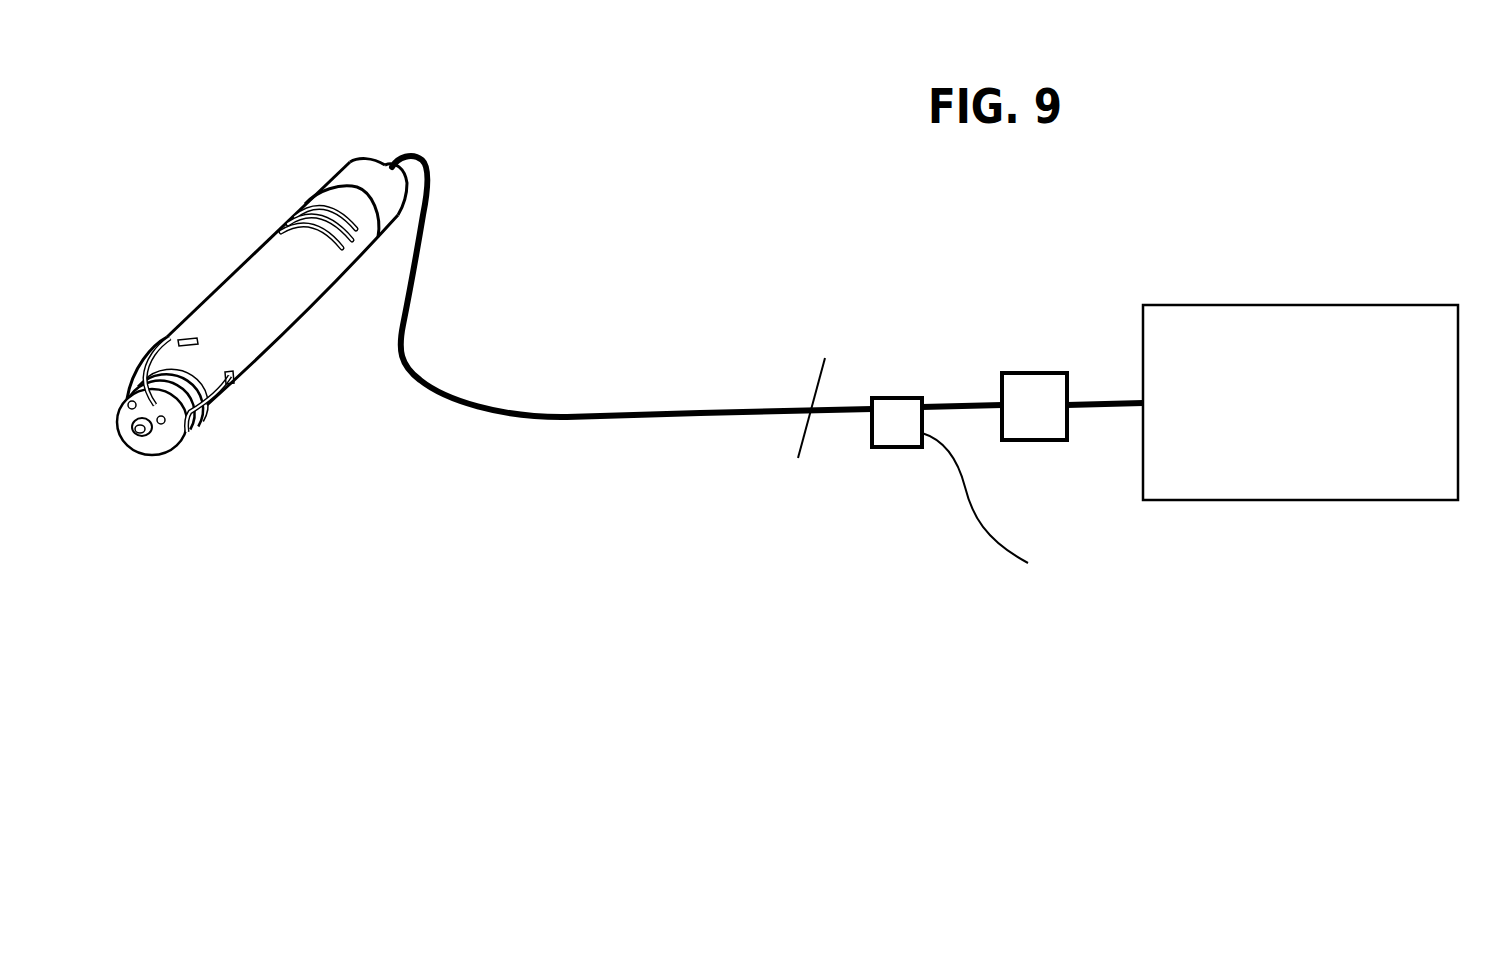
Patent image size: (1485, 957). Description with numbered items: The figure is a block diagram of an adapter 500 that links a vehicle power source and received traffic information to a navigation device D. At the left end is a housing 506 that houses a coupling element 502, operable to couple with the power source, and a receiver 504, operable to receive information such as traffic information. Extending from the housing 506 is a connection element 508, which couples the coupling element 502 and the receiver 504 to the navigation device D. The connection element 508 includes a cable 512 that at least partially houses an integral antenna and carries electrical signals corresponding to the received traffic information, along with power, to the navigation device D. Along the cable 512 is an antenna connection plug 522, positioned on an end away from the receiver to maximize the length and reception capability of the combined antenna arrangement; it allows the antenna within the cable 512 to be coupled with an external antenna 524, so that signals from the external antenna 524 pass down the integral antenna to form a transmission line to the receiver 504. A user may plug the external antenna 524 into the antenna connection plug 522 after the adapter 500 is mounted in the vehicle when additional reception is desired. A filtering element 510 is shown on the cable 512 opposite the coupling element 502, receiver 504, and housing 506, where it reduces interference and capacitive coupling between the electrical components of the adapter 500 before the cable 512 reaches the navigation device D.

The adapter 500 is at (679, 186).
The coupling element 502 is at (211, 407).
The receiver 504 is at (237, 305).
The housing 506 is at (277, 267).
The connection element 508 is at (570, 417).
The filtering element 510 is at (1033, 387).
The cable 512 is at (720, 410).
The antenna connection plug 522 is at (907, 408).
The external antenna 524 is at (950, 489).
The navigation device D is at (1327, 303).